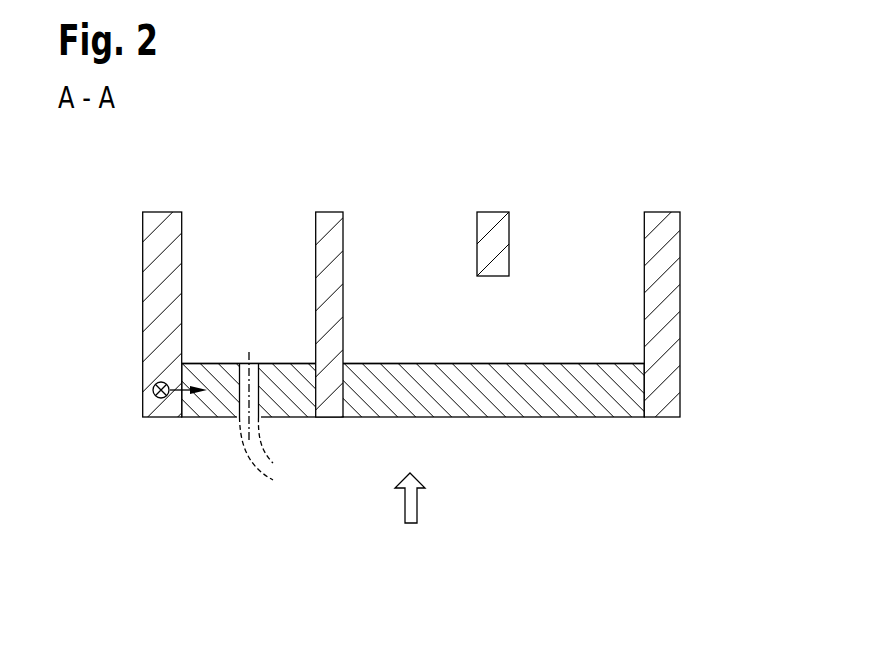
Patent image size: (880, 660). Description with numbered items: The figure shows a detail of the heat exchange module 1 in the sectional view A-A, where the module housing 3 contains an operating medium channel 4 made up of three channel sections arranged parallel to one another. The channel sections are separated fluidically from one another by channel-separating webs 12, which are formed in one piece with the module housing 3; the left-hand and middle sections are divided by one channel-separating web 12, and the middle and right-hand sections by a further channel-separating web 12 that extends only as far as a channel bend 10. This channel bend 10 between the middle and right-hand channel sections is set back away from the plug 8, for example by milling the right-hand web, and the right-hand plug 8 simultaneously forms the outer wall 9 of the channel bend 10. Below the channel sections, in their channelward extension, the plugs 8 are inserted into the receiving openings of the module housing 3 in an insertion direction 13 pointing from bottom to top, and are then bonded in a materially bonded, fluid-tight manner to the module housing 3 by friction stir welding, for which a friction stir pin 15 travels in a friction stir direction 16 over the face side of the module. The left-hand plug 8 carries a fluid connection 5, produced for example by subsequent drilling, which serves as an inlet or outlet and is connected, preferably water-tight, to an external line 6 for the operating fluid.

The heat exchange module 1 is at (686, 105).
The module housing 3 is at (660, 372).
The operating medium channel 4 is at (227, 320).
The fluid connection 5 is at (239, 390).
The external line 6 is at (253, 470).
The plug 8 is at (295, 392).
The outer wall 9 is at (504, 347).
The channel bend 10 is at (483, 318).
The channel-separating web 12 is at (334, 212).
The insertion direction 13 is at (410, 523).
The friction stir pin 15 is at (152, 391).
The friction stir direction 16 is at (167, 398).